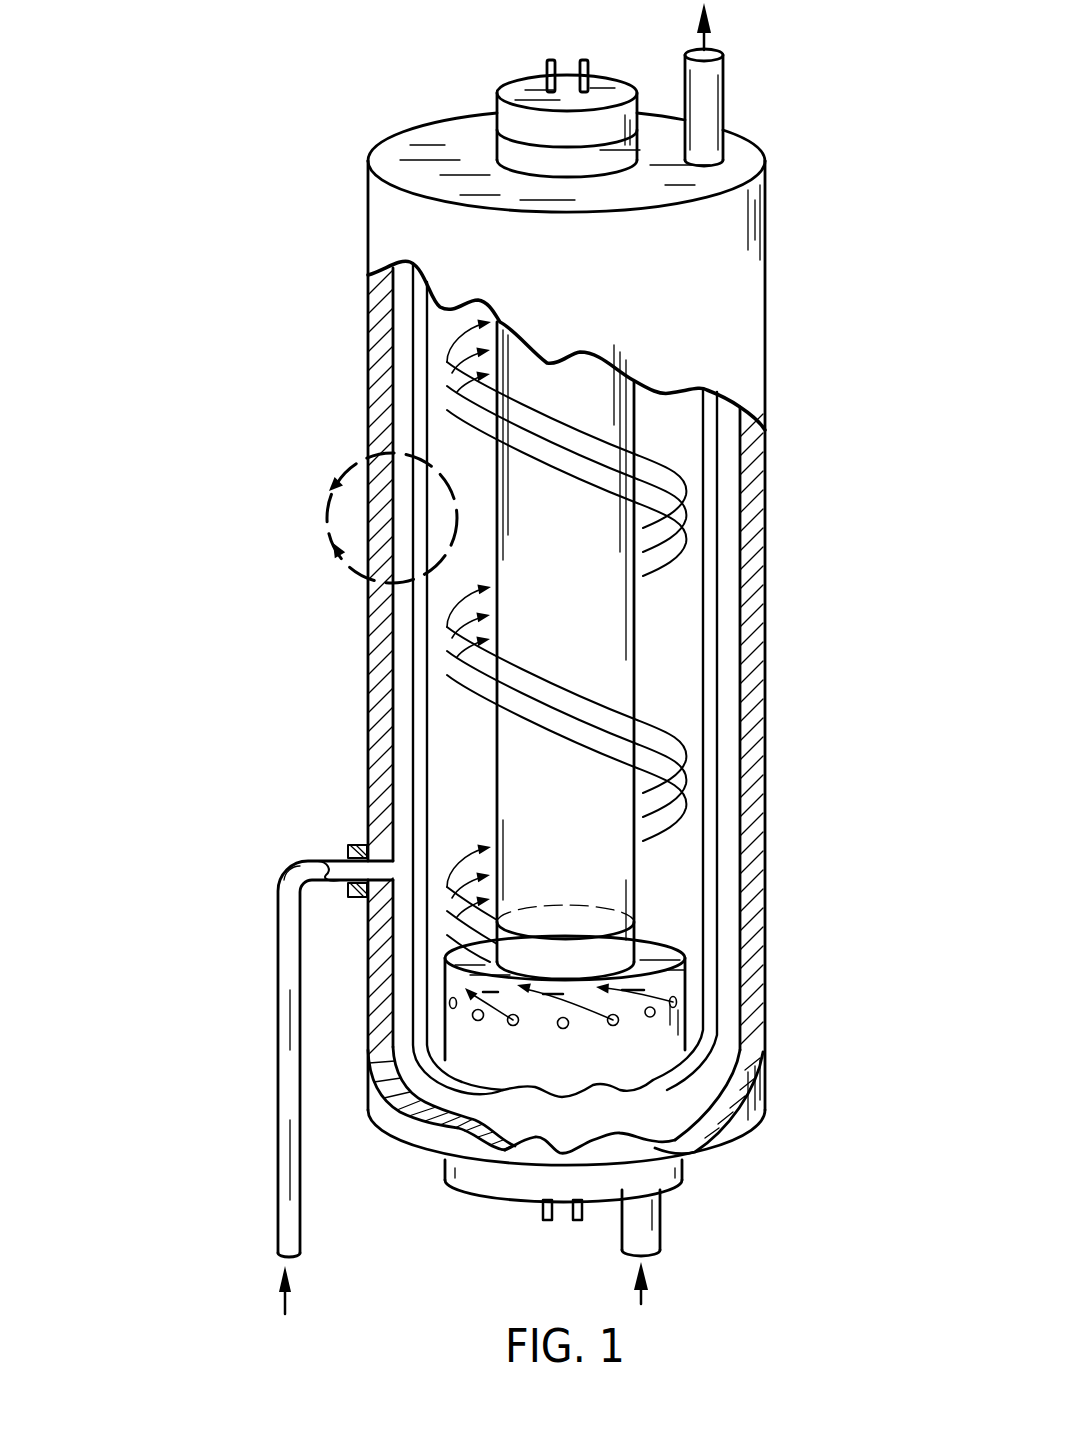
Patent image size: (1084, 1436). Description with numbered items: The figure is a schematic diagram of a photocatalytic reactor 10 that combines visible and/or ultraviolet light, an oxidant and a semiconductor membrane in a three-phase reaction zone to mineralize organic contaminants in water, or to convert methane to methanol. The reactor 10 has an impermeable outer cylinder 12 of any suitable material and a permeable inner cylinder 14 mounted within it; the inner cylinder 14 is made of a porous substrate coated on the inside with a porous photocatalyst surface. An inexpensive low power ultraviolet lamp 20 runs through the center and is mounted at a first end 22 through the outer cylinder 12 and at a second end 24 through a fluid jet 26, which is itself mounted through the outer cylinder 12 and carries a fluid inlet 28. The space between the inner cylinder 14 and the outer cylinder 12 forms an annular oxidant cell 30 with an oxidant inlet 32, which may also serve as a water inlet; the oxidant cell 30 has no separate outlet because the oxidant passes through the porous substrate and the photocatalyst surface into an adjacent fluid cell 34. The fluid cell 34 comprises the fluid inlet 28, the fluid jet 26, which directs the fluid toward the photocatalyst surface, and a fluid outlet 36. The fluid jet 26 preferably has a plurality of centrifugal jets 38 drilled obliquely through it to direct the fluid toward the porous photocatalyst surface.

The photocatalytic reactor 10 is at (365, 90).
The outer cylinder 12 is at (765, 220).
The inner cylinder 14 is at (717, 498).
The ultraviolet lamp 20 is at (634, 687).
The first end 22 is at (530, 77).
The second end 24 is at (547, 1223).
The fluid jet 26 is at (475, 1193).
The fluid inlet 28 is at (662, 1217).
The annular oxidant cell 30 is at (728, 618).
The oxidant inlet 32 is at (275, 934).
The fluid cell 34 is at (457, 780).
The fluid outlet 36 is at (725, 78).
The centrifugal jets 38 is at (565, 1028).